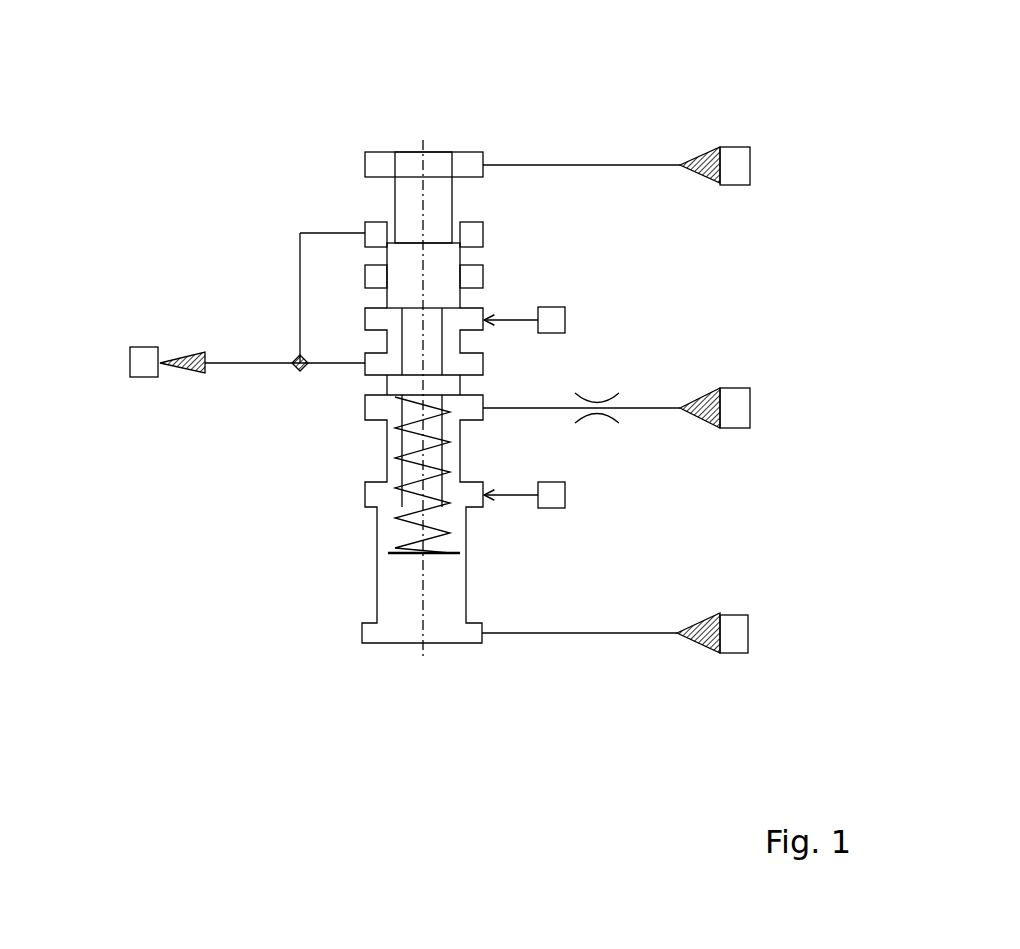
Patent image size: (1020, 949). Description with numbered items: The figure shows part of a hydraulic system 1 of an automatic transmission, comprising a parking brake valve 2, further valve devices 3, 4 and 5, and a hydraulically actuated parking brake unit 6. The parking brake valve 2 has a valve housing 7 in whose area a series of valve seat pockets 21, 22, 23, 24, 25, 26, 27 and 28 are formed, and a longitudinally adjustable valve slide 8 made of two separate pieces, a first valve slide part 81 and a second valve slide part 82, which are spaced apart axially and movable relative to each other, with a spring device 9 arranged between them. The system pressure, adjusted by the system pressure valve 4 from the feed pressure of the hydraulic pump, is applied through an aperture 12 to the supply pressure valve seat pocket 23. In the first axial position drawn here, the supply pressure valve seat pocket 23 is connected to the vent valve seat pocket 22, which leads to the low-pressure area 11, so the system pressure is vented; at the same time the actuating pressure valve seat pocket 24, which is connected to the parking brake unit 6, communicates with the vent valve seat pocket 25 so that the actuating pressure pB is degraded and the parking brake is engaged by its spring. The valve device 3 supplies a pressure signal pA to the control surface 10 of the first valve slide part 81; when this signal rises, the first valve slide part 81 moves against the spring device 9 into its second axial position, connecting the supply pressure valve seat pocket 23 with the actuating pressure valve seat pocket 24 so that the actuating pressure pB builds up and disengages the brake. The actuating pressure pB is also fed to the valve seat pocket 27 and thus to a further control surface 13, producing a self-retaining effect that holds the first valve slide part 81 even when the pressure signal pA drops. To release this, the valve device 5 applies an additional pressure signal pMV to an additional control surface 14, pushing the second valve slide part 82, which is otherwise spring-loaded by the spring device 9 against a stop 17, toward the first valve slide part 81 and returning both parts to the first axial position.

The hydraulic system 1 is at (220, 143).
The parking brake valve 2 is at (443, 130).
The valve device 3 is at (735, 147).
The system pressure valve 4 is at (750, 408).
The valve device 5 is at (735, 653).
The parking brake unit 6 is at (130, 362).
The valve housing 7 is at (372, 148).
The valve slide 8 is at (372, 193).
The spring device 9 is at (377, 520).
The control surface 10 is at (415, 152).
The low-pressure area 11 is at (565, 318).
The aperture 12 is at (597, 412).
The further control surface 13 is at (365, 222).
The additional control surface 14 is at (397, 645).
The stop 17 is at (455, 645).
The valve seat pocket 21 is at (360, 632).
The vent valve seat pocket 22 is at (365, 492).
The supply pressure valve seat pocket 23 is at (365, 408).
The actuating pressure valve seat pocket 24 is at (483, 360).
The vent valve seat pocket 25 is at (365, 320).
The valve seat pocket 26 is at (483, 275).
The valve seat pocket 27 is at (483, 232).
The valve seat pocket 28 is at (350, 160).
The first valve slide part 81 is at (445, 172).
The second valve slide part 82 is at (452, 578).
The pressure signal pA is at (543, 165).
The actuating pressure pB is at (233, 365).
The additional pressure signal pMV is at (580, 633).